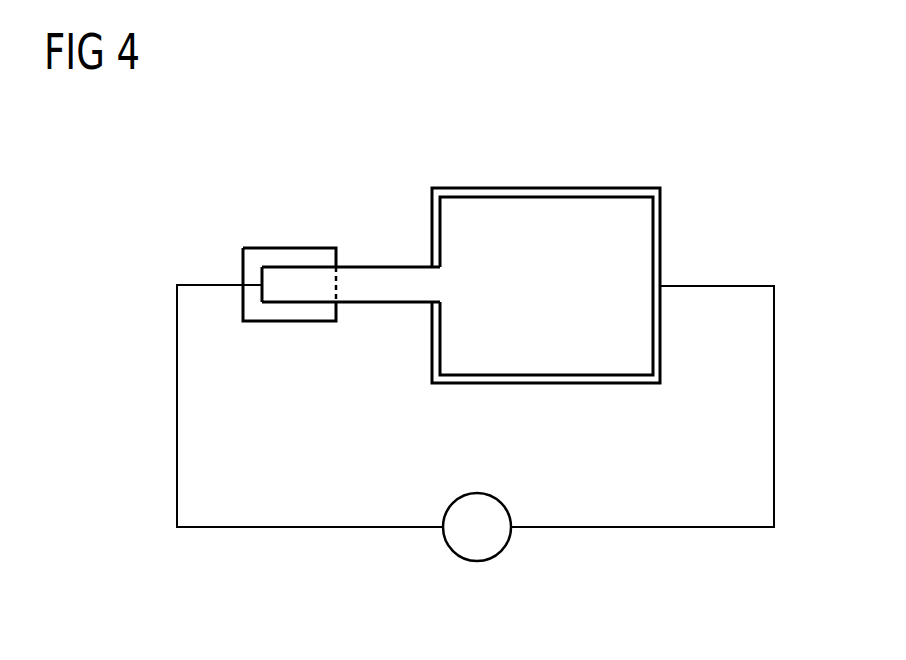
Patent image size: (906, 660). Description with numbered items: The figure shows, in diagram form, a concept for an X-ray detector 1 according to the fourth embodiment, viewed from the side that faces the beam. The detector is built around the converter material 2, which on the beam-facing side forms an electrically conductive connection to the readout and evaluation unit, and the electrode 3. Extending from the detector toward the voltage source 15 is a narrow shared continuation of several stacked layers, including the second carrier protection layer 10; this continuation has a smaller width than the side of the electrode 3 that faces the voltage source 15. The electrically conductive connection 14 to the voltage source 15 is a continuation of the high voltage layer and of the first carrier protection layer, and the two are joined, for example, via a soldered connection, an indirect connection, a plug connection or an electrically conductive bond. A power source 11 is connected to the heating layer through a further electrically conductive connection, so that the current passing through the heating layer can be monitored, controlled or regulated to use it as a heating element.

The X-ray detector 1 is at (631, 155).
The converter material 2 is at (661, 241).
The electrode 3 is at (656, 336).
The second carrier protection layer 10 is at (383, 290).
The power source 11 is at (475, 548).
The electrically conductive connection 14 is at (370, 265).
The voltage source 15 is at (280, 323).